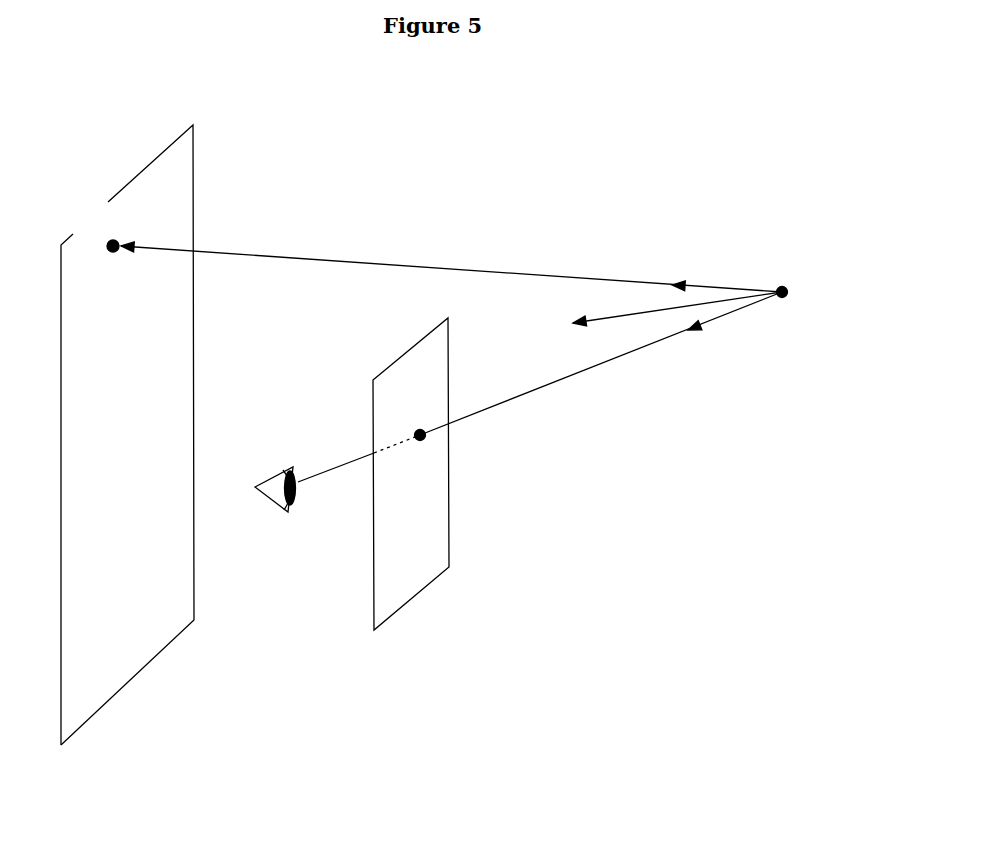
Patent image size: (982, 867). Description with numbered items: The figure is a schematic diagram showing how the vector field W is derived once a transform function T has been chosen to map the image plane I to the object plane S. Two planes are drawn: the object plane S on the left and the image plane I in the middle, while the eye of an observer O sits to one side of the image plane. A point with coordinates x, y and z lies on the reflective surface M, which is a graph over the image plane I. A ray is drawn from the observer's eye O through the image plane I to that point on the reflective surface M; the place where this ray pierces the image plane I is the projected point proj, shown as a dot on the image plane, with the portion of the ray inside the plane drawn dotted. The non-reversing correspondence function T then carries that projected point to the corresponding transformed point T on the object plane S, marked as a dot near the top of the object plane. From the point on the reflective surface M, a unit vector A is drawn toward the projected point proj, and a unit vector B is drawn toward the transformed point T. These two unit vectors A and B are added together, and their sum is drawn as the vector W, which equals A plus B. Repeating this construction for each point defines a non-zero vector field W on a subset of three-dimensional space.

The object plane S is at (127, 435).
The image plane I is at (411, 474).
The eye of an observer O is at (255, 489).
The reflective surface M is at (802, 303).
The unit vector A is at (540, 387).
The unit vector B is at (451, 267).
The vector field W(x,y,z) W is at (635, 316).
The projected point proj(x,y,z) proj is at (459, 449).
The transform function T is at (101, 232).